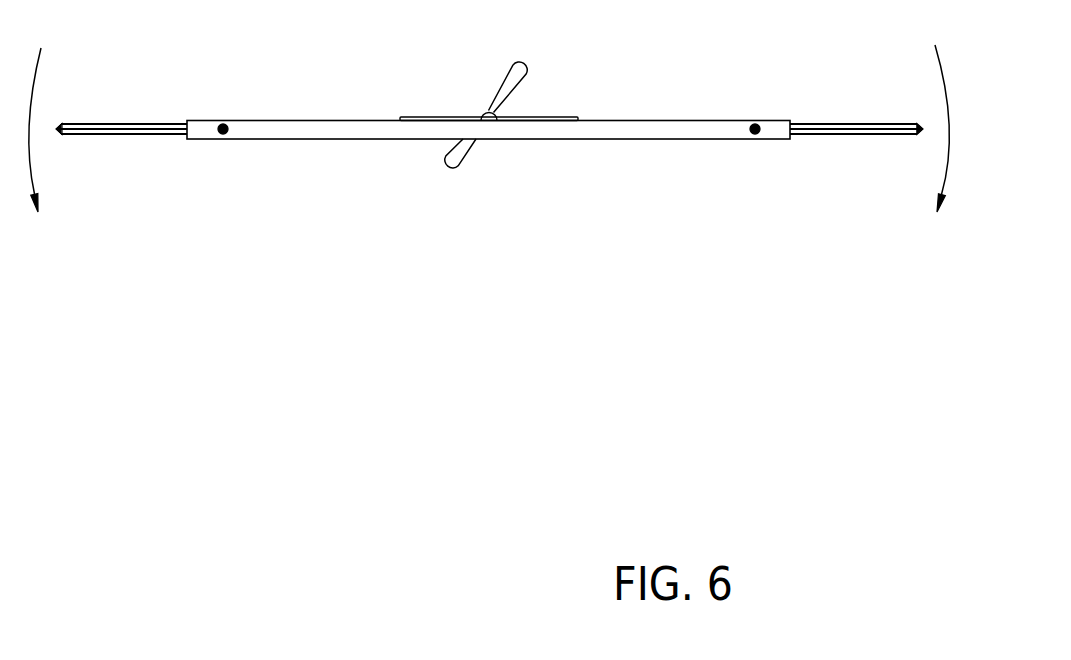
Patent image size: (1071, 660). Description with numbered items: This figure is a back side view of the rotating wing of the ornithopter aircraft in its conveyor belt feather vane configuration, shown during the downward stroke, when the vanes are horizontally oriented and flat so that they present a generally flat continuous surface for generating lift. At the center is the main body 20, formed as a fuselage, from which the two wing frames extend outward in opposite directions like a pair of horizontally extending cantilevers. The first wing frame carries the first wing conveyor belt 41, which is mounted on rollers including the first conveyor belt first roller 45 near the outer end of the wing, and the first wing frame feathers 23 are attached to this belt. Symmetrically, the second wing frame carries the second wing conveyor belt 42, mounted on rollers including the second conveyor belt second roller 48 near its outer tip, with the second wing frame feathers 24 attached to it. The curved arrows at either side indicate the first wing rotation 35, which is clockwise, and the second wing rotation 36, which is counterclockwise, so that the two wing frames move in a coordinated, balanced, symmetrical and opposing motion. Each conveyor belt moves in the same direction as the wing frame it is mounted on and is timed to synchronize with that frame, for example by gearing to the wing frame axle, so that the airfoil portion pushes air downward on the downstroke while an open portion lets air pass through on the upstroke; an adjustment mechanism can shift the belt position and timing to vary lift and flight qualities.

The main body 20 is at (560, 114).
The first wing frame feathers 23 is at (830, 124).
The second wing frame feathers 24 is at (147, 115).
The first wing rotation 35 is at (880, 123).
The second wing rotation 36 is at (42, 95).
The first wing conveyor belt 41 is at (819, 138).
The second wing conveyor belt 42 is at (165, 143).
The first conveyor belt first roller 45 is at (886, 138).
The second conveyor belt second roller 48 is at (58, 133).